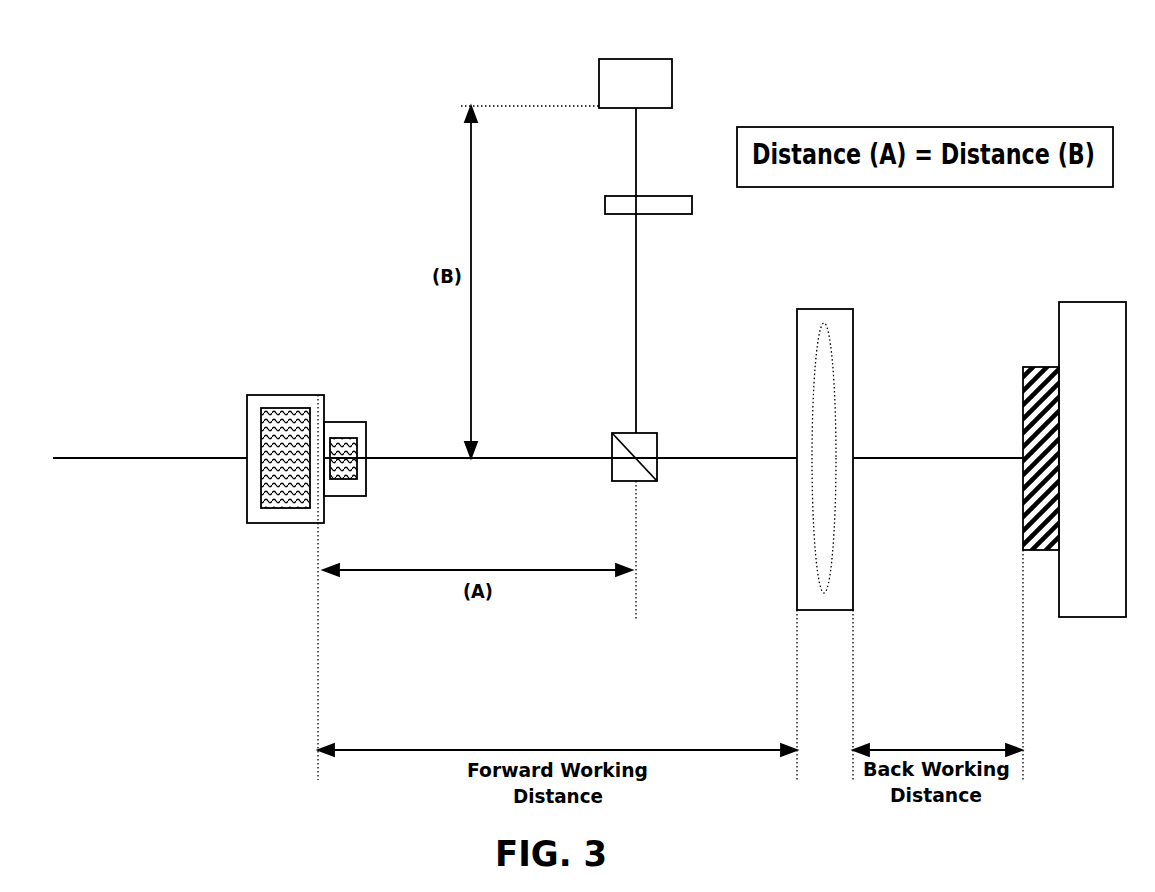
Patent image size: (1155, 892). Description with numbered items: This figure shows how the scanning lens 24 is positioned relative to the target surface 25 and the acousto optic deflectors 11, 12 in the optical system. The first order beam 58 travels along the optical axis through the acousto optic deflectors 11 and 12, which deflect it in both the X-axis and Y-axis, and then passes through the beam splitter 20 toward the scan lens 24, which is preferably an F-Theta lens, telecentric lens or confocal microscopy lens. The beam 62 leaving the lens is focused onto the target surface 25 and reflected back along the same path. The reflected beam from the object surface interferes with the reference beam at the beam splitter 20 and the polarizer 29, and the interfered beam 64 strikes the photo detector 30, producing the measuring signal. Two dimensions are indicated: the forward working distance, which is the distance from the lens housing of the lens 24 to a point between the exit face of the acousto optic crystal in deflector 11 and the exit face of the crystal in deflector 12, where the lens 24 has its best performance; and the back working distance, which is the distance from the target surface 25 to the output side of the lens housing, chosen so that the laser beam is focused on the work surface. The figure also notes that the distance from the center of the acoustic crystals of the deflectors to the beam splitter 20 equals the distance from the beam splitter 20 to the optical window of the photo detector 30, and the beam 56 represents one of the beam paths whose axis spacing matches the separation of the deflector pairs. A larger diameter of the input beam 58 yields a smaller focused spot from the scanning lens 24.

The acousto optic deflector 11 is at (290, 523).
The acousto optic deflector 12 is at (343, 497).
The beam splitter 20 is at (617, 433).
The scan lens 24 is at (822, 547).
The target surface 25 is at (1033, 553).
The polarizer 29 is at (605, 205).
The photo detector 30 is at (672, 80).
The beam 56 is at (198, 458).
The first order beam 58 is at (680, 458).
The beam 62 is at (900, 458).
The interfered beam 64 is at (633, 360).